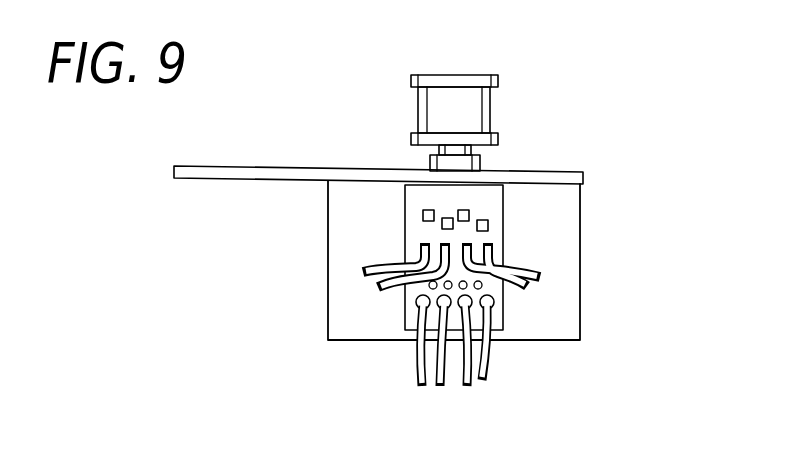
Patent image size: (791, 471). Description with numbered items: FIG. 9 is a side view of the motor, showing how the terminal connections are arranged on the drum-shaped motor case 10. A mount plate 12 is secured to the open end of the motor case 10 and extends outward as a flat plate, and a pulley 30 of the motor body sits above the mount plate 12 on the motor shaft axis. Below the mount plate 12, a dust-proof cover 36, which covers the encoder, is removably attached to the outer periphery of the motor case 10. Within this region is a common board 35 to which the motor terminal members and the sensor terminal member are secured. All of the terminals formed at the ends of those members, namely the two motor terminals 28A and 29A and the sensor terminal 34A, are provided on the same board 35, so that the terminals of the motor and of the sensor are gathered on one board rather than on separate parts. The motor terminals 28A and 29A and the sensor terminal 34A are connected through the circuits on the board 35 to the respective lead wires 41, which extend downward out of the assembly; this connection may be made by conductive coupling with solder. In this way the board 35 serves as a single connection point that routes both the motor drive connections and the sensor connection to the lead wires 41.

The motor case 10 is at (328, 262).
The mount plate 12 is at (222, 166).
The motor terminal 28A is at (462, 209).
The motor terminal 29A is at (454, 228).
The pulley 30 is at (458, 100).
The sensor terminal 34A is at (480, 288).
The board 35 is at (489, 192).
The dust-proof cover 36 is at (406, 260).
The lead wires 41 is at (380, 293).